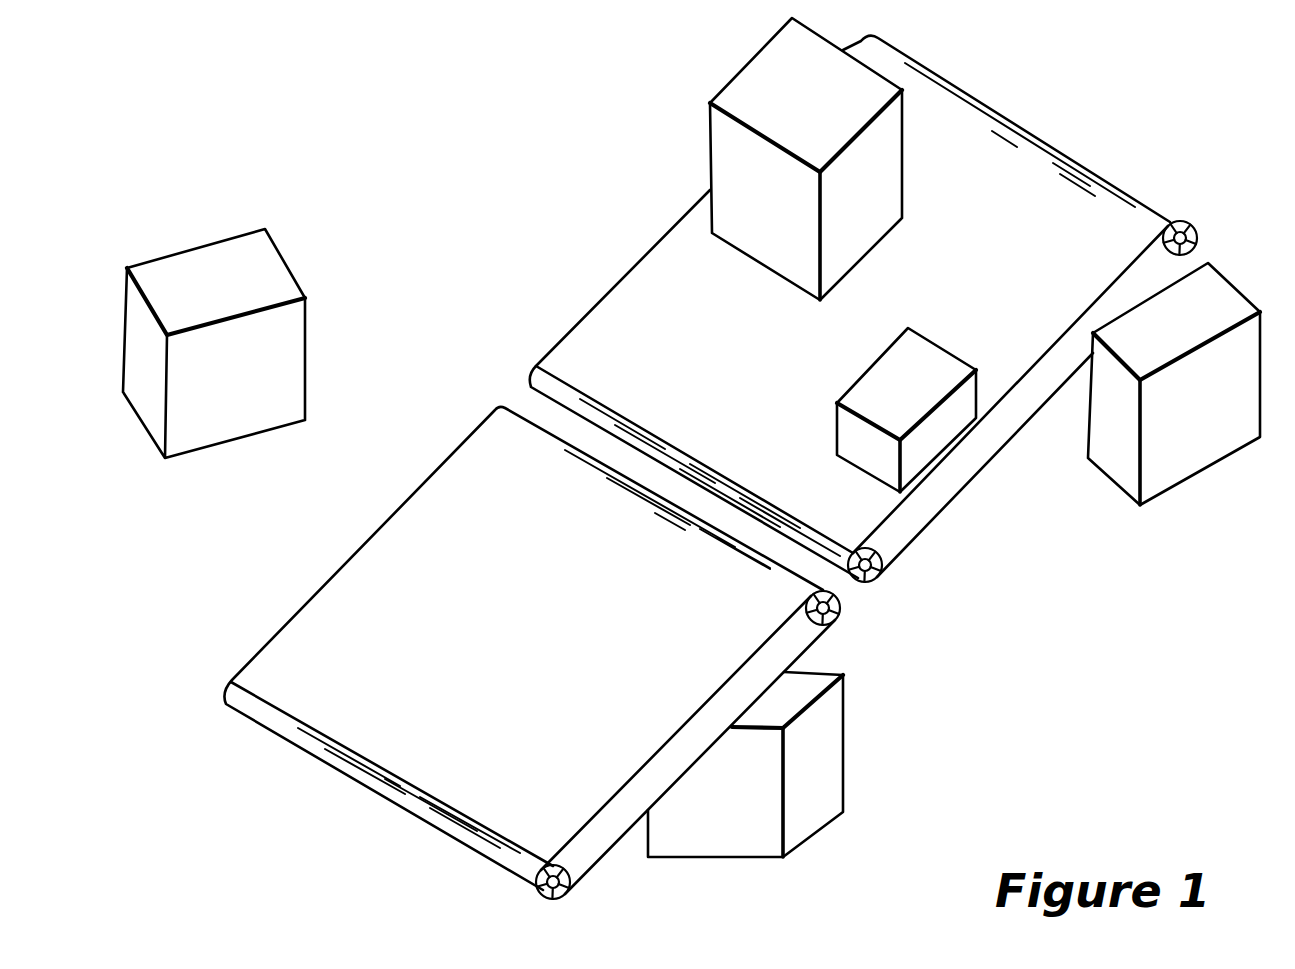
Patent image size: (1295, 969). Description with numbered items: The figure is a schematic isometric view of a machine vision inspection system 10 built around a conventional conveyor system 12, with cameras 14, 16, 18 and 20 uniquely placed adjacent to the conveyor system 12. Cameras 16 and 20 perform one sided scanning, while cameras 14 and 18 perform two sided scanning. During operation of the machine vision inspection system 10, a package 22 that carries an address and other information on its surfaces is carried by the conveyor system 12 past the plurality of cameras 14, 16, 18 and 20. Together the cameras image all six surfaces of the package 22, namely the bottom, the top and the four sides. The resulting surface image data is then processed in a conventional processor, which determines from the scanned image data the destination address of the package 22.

The machine vision inspection system 10 is at (477, 226).
The conveyor system 12 is at (336, 781).
The camera 14 is at (203, 267).
The camera 16 is at (830, 768).
The camera 18 is at (1185, 458).
The camera 20 is at (756, 73).
The package 22 is at (877, 380).